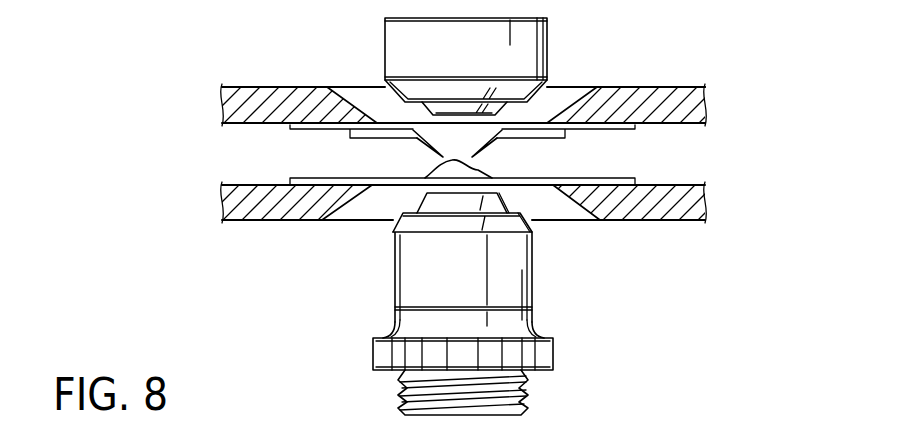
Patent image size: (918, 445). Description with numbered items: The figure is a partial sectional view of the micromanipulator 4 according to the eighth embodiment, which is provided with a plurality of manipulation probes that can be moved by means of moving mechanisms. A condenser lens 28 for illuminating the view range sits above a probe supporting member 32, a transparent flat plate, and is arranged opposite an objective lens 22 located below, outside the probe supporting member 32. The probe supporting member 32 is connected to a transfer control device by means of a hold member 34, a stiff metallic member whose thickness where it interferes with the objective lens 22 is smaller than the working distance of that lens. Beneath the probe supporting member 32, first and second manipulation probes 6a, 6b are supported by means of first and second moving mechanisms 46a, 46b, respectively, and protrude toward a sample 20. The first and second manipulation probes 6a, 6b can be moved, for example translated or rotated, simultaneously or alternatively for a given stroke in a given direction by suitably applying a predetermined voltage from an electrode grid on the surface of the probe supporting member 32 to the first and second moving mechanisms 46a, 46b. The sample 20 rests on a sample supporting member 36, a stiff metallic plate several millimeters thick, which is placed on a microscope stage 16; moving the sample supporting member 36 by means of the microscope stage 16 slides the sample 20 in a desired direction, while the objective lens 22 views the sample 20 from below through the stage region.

The micromanipulator 4 is at (460, 70).
The first manipulation probe 6a is at (433, 147).
The second manipulation probe 6b is at (481, 148).
The microscope stage 16 is at (460, 233).
The sample 20 is at (435, 170).
The objective lens 22 is at (532, 293).
The condenser lens 28 is at (548, 46).
The probe supporting member 32 is at (302, 120).
The hold member 34 is at (688, 86).
The sample supporting member 36 is at (538, 187).
The first moving mechanism 46a is at (374, 110).
The second moving mechanism 46b is at (572, 112).